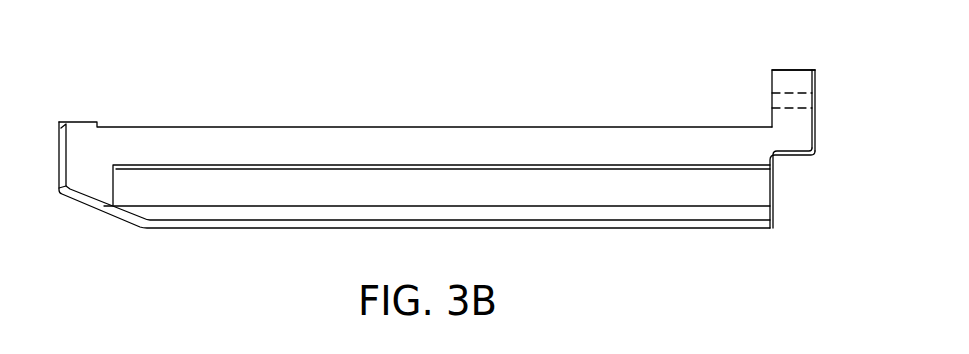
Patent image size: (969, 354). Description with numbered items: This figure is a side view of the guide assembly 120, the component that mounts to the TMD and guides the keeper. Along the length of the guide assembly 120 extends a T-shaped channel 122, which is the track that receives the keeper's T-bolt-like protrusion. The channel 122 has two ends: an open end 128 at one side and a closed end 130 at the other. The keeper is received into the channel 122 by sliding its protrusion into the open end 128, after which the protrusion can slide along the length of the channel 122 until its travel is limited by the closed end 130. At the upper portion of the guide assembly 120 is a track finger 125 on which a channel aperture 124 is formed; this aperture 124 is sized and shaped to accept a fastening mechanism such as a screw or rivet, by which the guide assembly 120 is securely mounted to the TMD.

The guide assembly 120 is at (374, 101).
The T-shaped channel 122 is at (643, 188).
The channel aperture 124 is at (772, 102).
The track finger 125 is at (792, 70).
The open end 128 is at (772, 203).
The closed end 130 is at (104, 207).